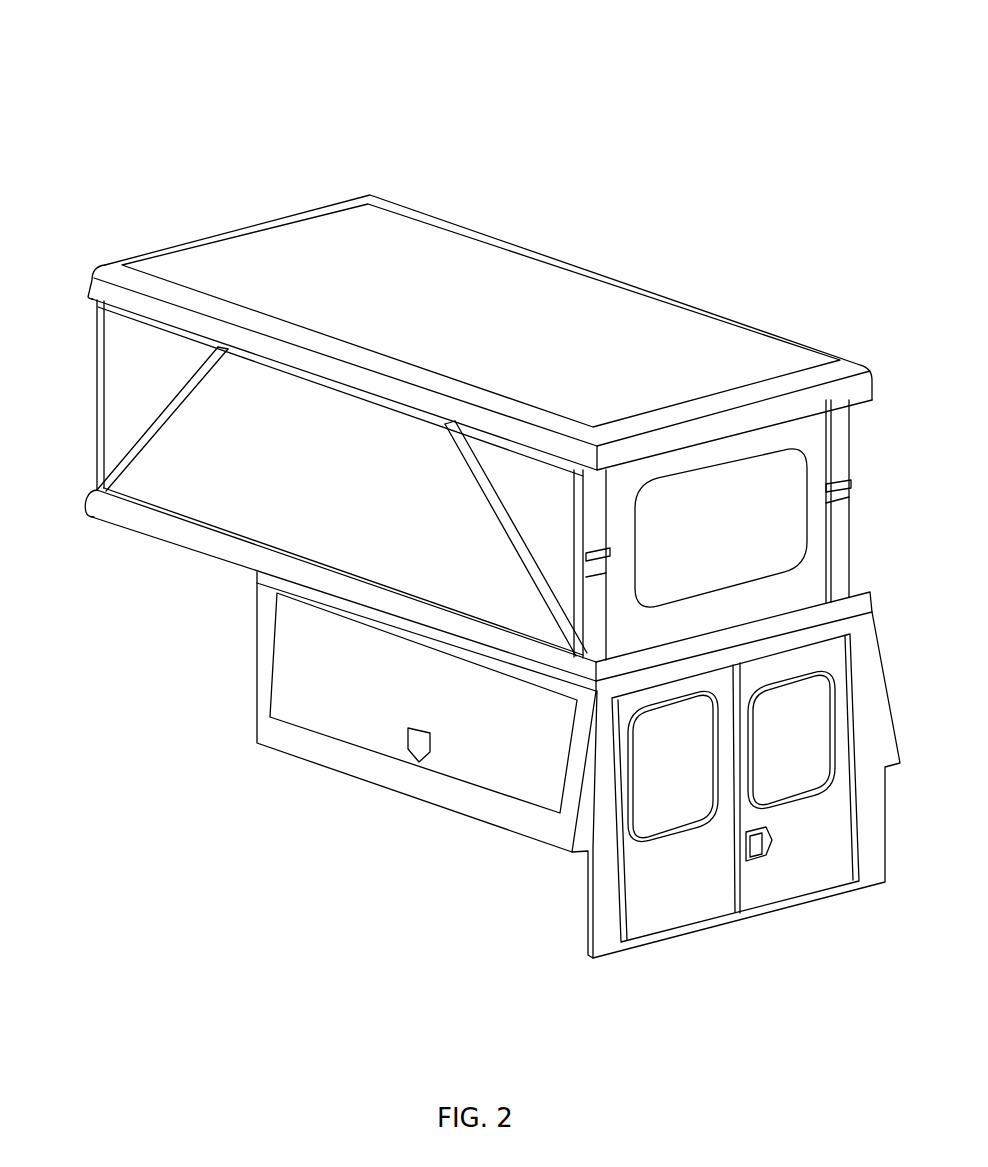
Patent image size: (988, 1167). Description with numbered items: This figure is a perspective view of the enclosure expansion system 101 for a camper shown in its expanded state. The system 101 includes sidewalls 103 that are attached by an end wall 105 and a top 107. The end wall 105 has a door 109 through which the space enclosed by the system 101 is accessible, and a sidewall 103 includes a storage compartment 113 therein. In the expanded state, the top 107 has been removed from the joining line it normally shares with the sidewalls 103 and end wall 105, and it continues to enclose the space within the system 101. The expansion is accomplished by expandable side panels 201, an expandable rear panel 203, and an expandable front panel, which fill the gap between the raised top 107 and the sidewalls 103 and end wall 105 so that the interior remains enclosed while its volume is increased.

The system 101 is at (111, 57).
The sidewalls 103 is at (257, 662).
The end wall 105 is at (618, 952).
The top 107 is at (242, 228).
The door 109 is at (718, 917).
The storage compartment 113 is at (398, 760).
The expandable side panels 201 is at (101, 397).
The expandable rear panel 203 is at (830, 555).